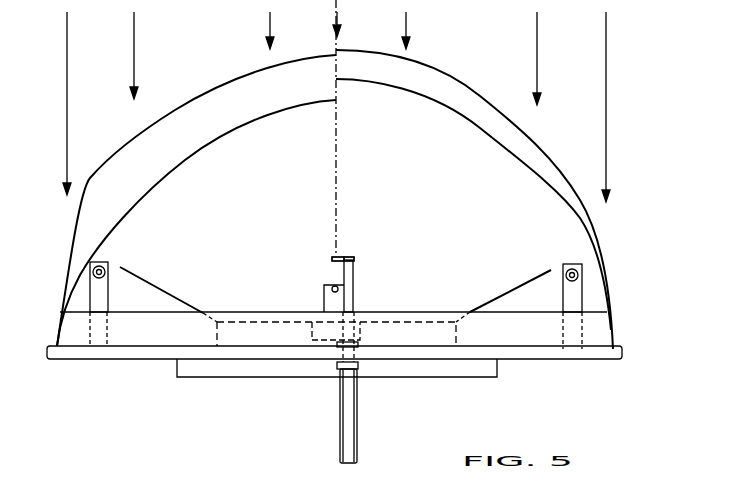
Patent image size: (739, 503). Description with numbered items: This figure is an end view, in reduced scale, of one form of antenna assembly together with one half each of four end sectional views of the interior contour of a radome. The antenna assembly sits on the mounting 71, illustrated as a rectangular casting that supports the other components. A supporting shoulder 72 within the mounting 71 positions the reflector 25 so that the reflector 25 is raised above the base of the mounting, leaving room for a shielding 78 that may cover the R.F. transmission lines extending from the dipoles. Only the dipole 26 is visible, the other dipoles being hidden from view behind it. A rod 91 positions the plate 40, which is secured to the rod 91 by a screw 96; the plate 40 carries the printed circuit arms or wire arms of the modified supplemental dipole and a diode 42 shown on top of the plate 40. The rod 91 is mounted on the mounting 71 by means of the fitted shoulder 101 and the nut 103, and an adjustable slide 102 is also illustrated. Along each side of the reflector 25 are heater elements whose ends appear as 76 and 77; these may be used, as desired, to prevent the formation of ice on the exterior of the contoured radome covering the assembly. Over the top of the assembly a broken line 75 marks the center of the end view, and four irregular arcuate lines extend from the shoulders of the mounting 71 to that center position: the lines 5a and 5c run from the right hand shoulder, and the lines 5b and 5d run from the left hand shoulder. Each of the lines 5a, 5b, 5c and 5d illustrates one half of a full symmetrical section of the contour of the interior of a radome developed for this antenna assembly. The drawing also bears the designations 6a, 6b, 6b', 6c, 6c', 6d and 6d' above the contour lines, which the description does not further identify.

The irregular arcuate line 5a is at (487, 92).
The irregular arcuate line 5b is at (190, 96).
The irregular arcuate line 5c is at (446, 112).
The irregular arcuate line 5d is at (278, 116).
The central light ray 6a is at (338, 32).
The light ray 6b is at (418, 29).
The light ray 6b' is at (258, 29).
The light ray 6c is at (548, 58).
The light ray 6c' is at (148, 55).
The light ray 6d is at (617, 107).
The light ray 6d' is at (82, 103).
The broken line 75 is at (336, 164).
The plate 40 is at (342, 257).
The diode 42 is at (335, 257).
The screw 96 is at (349, 258).
The rod 91 is at (354, 289).
The dipole 26 is at (324, 302).
The reflector 25 is at (513, 296).
The heater element 77 is at (108, 262).
The heater element 76 is at (564, 266).
The shielding 78 is at (312, 341).
The supporting shoulder 72 is at (460, 345).
The mounting 71 is at (585, 362).
The fitted shoulder 101 is at (365, 344).
The nut 103 is at (337, 371).
The adjustable slide 102 is at (357, 445).